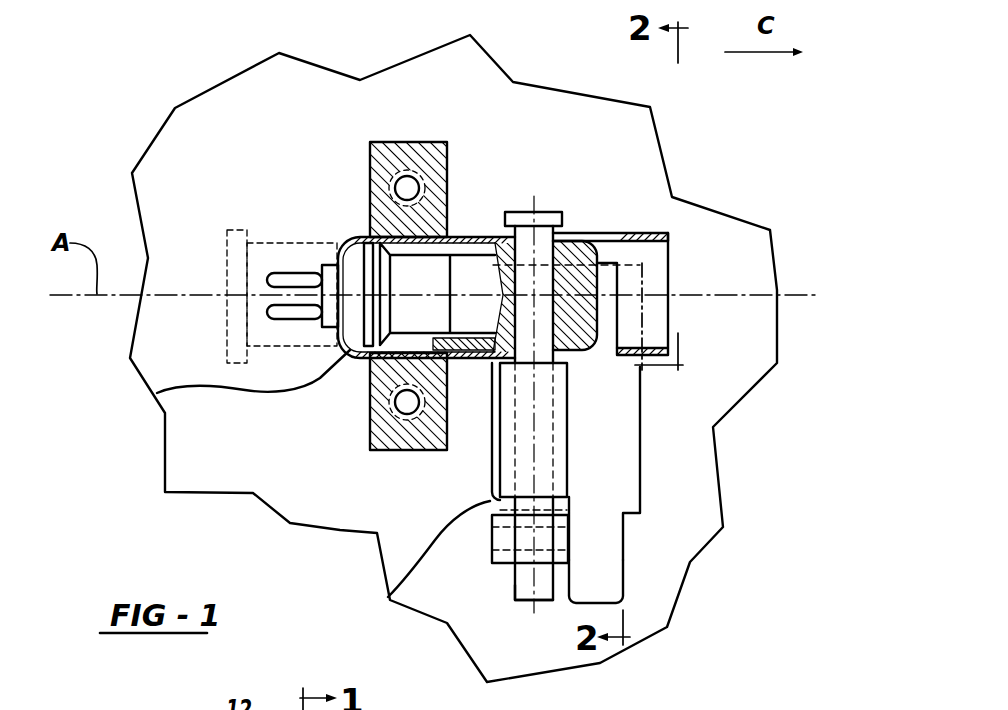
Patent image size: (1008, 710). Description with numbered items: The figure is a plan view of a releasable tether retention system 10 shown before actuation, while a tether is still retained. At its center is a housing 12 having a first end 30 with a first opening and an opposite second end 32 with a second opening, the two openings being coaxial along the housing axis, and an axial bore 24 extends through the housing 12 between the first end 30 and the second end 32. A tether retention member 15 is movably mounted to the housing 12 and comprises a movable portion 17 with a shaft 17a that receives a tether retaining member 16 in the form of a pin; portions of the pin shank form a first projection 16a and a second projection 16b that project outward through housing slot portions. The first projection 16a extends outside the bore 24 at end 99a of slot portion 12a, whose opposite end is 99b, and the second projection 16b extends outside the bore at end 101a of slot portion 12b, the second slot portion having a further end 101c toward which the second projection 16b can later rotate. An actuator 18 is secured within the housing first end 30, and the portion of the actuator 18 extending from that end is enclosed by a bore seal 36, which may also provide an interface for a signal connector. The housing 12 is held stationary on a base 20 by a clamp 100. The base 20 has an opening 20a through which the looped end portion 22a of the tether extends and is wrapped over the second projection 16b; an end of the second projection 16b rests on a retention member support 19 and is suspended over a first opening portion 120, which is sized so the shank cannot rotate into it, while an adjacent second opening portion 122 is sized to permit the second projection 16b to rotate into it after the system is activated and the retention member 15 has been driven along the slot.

The releasable tether retention system 10 is at (117, 561).
The housing 12 is at (348, 229).
The housing slot portion 12a is at (575, 255).
The housing slot portion 12b is at (560, 350).
The tether retention member 15 is at (618, 233).
The tether retaining member 16 is at (562, 208).
The first projection 16a is at (518, 210).
The second projection 16b is at (517, 604).
The movable portion 17 is at (660, 328).
The shaft 17a is at (622, 258).
The actuator 18 is at (427, 268).
The retention member support 19 is at (494, 564).
The base 20 is at (305, 463).
The opening 20a is at (593, 549).
The end portion of the tether 22a is at (565, 430).
The axial bore 24 is at (657, 262).
The first end 30 is at (157, 393).
The second end 32 is at (668, 233).
The bore seal 36 is at (233, 230).
The end of first slot portion 99a is at (512, 234).
The end of first slot portion 99b is at (627, 232).
The clamp 100 is at (373, 136).
The first slot portion first end 101a is at (510, 363).
The second slot portion end 101c is at (603, 282).
The first opening portion 120 is at (395, 583).
The second opening portion 122 is at (610, 453).